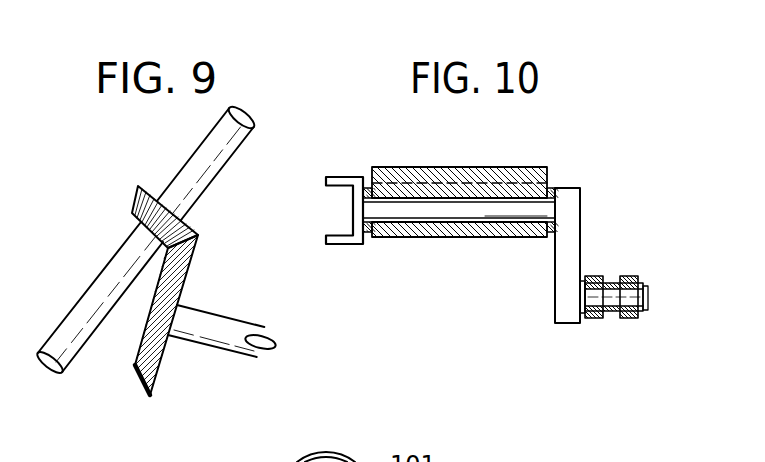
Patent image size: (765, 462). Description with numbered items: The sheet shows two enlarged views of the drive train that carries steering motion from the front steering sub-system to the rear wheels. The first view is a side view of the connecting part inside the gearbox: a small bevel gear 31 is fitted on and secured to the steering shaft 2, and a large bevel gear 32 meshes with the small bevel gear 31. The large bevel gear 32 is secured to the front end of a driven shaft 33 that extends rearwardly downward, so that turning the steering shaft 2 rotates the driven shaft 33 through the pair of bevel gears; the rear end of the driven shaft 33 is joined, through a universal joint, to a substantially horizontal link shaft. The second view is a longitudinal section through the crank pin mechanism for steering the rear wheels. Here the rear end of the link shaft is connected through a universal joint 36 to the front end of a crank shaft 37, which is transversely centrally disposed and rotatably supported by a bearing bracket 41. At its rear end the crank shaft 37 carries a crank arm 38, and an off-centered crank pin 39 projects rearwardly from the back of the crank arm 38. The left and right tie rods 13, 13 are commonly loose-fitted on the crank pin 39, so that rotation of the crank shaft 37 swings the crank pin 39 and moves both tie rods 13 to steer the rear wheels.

In FIG. 9, the steering shaft 2 is at (230, 137).
In FIG. 9, the small bevel gear 31 is at (143, 200).
In FIG. 9, the large bevel gear 32 is at (150, 362).
In FIG. 9, the driven shaft 33 is at (242, 330).
In FIG. 10, the universal joint 36 is at (335, 177).
In FIG. 10, the crank shaft 37 is at (442, 212).
In FIG. 10, the crank arm 38 is at (565, 241).
In FIG. 10, the crank pin 39 is at (634, 297).
In FIG. 10, the bearing bracket 41 is at (476, 177).
In FIG. 10, the tie rods 13 is at (623, 275).